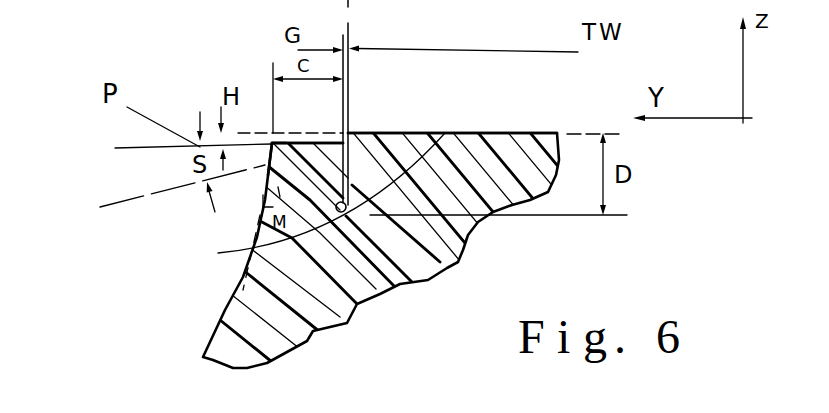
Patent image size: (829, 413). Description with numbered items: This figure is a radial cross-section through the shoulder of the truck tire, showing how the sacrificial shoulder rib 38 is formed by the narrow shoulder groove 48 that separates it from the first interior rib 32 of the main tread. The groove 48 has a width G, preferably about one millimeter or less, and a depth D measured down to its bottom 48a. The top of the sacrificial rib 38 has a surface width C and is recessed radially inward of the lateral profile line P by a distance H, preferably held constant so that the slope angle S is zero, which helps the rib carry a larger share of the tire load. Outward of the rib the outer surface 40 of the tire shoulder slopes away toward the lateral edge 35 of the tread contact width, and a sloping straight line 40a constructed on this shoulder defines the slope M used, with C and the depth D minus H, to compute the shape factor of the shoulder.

The first interior rib 32 is at (377, 133).
The lateral edge 35 is at (272, 140).
The sacrificial shoulder rib 38 is at (320, 135).
The tire shoulder outer surface 40 is at (273, 144).
The sloping straight line 40a is at (263, 196).
The narrow shoulder groove 48 is at (453, 133).
The bottom of narrow shoulder groove 48a is at (296, 198).